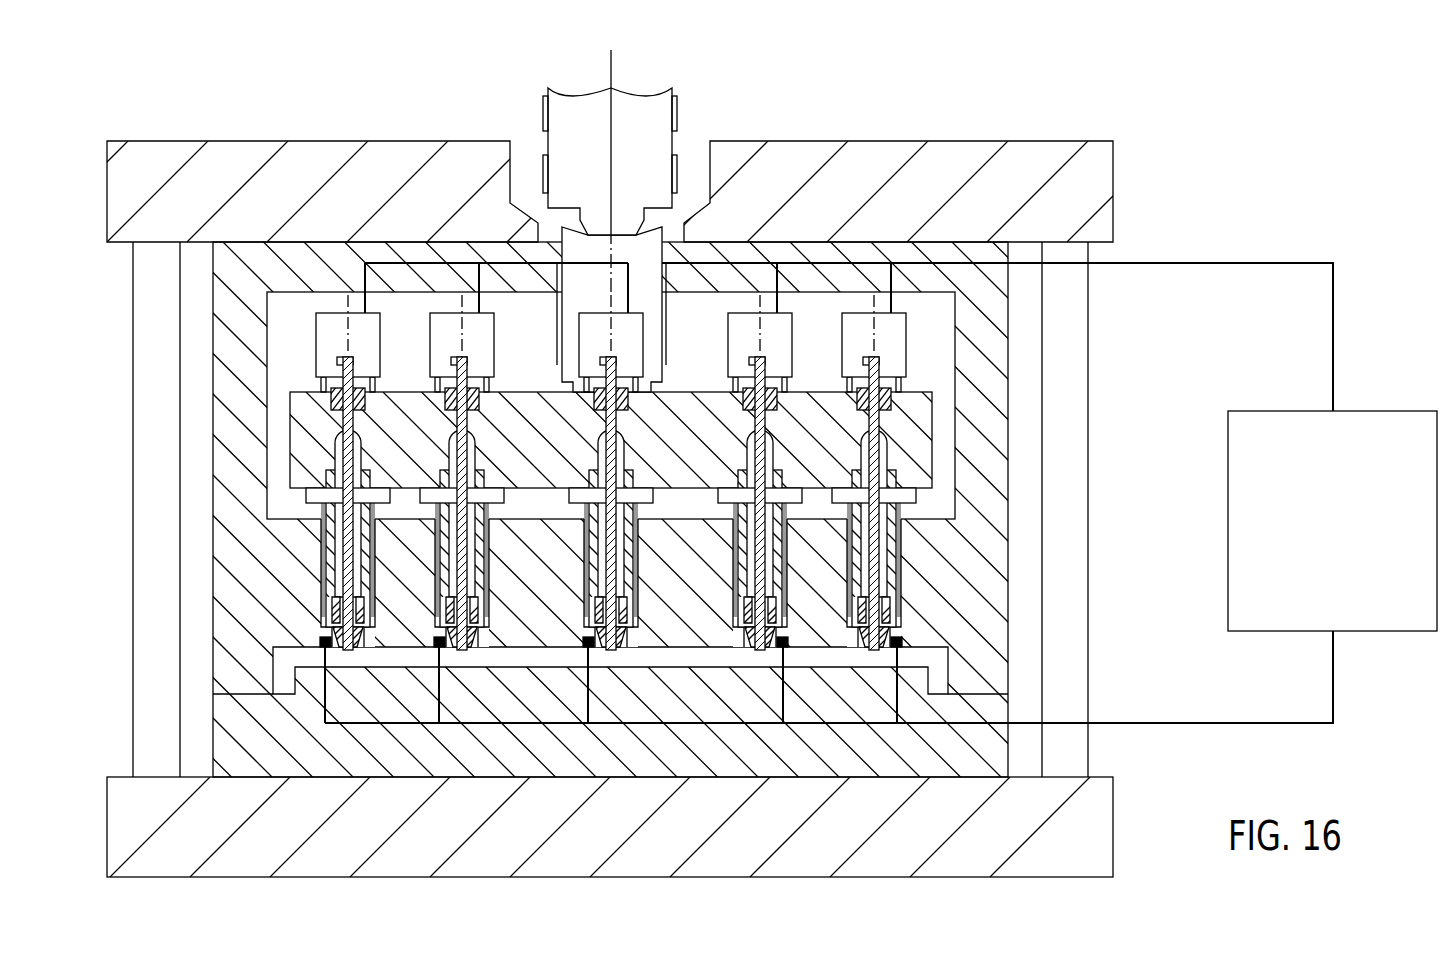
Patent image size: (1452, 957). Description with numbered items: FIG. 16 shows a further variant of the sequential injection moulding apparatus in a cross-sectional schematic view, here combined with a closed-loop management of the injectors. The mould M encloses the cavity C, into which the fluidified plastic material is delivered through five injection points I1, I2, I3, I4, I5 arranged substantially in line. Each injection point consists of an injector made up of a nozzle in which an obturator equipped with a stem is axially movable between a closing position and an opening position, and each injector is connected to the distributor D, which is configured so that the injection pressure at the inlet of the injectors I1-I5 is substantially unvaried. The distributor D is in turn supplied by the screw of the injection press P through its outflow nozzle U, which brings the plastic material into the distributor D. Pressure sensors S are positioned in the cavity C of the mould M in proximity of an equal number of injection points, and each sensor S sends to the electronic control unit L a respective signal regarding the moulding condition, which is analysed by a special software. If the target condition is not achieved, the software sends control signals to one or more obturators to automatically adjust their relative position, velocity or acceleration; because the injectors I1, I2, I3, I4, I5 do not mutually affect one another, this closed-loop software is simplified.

The injection press P is at (642, 130).
The outflow nozzle U is at (631, 207).
The distributor D is at (917, 403).
The electronic control unit L is at (1252, 492).
The mould M is at (206, 670).
The cavity C is at (690, 658).
The pressure sensor S is at (329, 650).
The injection point I1 is at (323, 514).
The injection point I2 is at (480, 580).
The injection point I3 is at (630, 574).
The injection point I4 is at (782, 573).
The injection point I5 is at (898, 581).